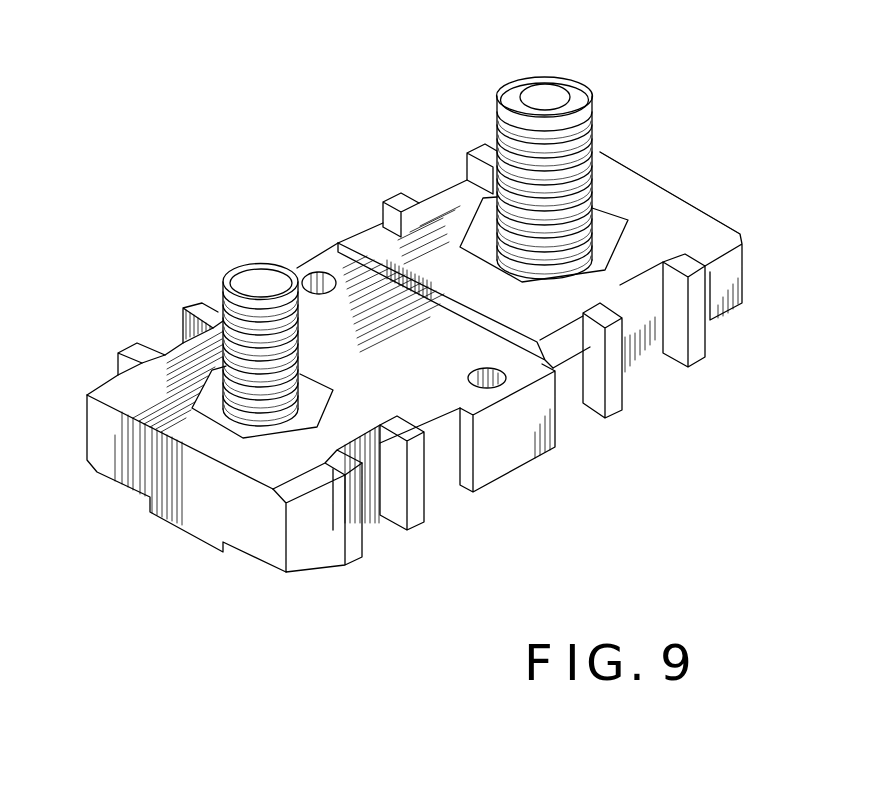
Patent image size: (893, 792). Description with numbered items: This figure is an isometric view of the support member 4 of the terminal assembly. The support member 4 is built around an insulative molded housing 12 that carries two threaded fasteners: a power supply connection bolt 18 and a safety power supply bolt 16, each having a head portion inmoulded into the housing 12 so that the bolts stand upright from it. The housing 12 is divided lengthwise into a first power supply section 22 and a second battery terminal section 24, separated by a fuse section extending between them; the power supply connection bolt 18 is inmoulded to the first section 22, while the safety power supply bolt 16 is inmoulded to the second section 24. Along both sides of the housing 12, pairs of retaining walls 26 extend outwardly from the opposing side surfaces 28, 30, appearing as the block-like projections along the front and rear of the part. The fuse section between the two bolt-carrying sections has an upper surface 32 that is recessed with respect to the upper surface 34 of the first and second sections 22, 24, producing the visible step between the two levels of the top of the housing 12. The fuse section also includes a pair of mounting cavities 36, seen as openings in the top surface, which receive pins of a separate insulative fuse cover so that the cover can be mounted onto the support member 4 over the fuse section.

The support member 4 is at (150, 101).
The insulative molded housing 12 is at (697, 212).
The safety power supply bolt 16 is at (253, 278).
The power supply connection bolt 18 is at (537, 100).
The first power supply section 22 is at (637, 360).
The second battery terminal section 24 is at (297, 542).
The retaining walls 26 is at (700, 340).
The side surface 28 is at (498, 460).
The side surface 30 is at (105, 384).
The upper surface of fuse section 32 is at (386, 280).
The upper surface of sections 34 is at (641, 200).
The mounting cavities 36 is at (492, 380).